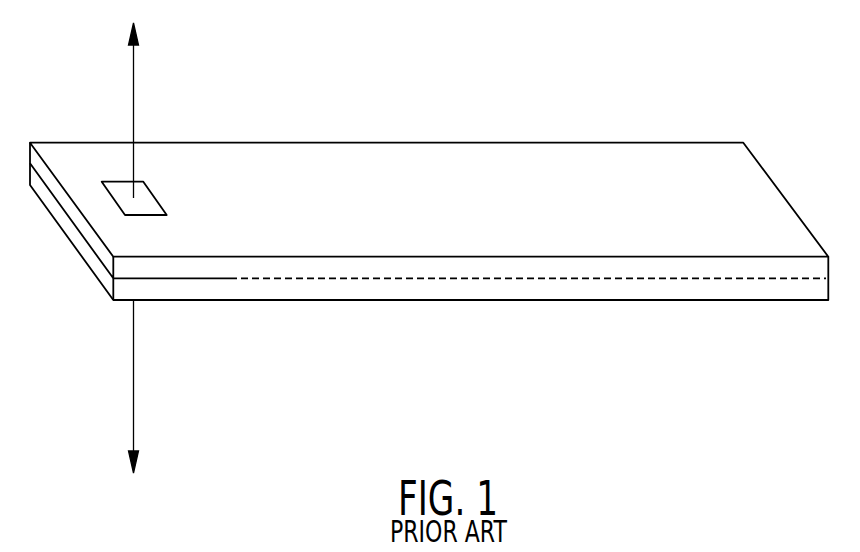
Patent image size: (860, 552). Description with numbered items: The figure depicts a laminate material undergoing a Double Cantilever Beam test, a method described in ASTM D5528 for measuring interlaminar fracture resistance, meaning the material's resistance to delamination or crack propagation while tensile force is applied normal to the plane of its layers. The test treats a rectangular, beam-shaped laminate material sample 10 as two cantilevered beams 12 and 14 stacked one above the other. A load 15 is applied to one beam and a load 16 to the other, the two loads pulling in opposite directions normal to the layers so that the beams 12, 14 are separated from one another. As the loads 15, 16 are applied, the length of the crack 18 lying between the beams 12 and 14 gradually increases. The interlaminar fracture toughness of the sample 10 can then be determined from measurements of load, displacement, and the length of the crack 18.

The laminate material sample 10 is at (429, 244).
The cantilevered beam 12 is at (265, 152).
The cantilevered beam 14 is at (253, 300).
The load 15 is at (134, 87).
The load 16 is at (134, 387).
The crack 18 is at (190, 278).